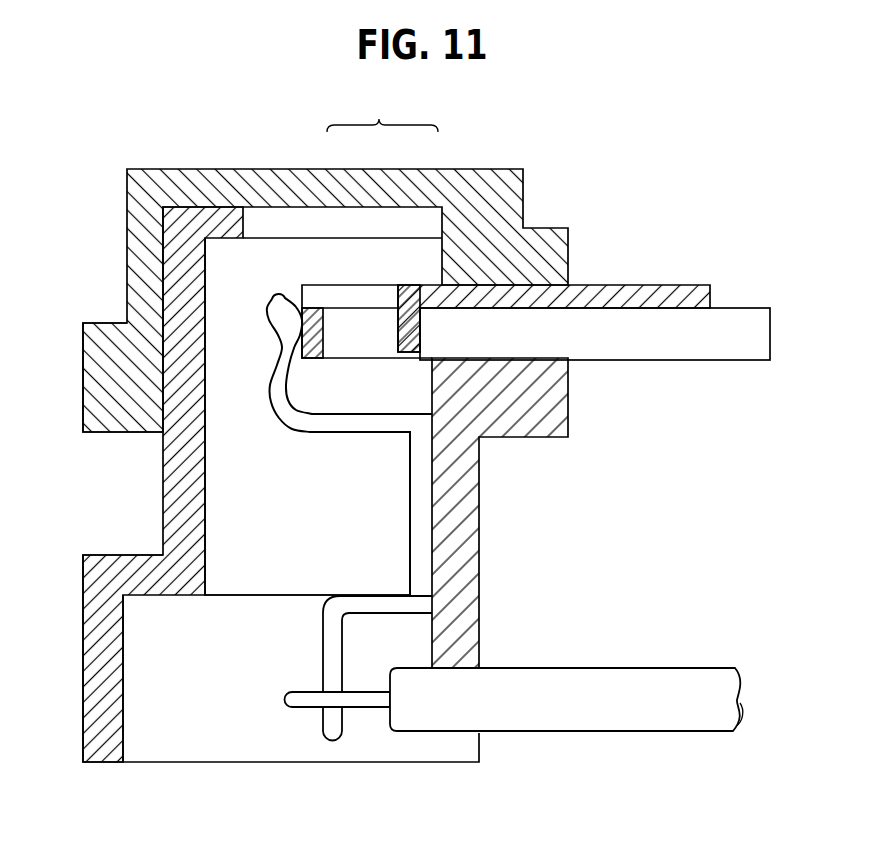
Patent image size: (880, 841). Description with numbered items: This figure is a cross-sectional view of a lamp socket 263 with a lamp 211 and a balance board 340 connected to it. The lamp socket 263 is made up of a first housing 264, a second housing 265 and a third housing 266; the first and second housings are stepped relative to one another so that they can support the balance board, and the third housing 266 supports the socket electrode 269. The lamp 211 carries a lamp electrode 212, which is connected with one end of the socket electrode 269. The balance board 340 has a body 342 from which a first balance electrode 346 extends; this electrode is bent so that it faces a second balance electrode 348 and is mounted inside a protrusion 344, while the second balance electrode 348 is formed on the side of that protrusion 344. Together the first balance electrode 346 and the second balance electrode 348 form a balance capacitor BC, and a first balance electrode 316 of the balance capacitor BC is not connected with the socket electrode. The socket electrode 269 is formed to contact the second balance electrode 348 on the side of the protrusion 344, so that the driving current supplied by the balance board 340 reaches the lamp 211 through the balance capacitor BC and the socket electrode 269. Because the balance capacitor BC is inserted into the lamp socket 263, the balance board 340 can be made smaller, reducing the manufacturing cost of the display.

The cable 211 is at (622, 717).
The lamp electrode 212 is at (370, 697).
The lamp socket 263 is at (588, 134).
The first housing 264 is at (98, 370).
The second housing 265 is at (98, 687).
The third housing 266 is at (227, 485).
The socket electrode 269 is at (320, 723).
The first balance electrode 316 is at (698, 298).
The balance board 340 is at (735, 257).
The body 342 is at (755, 342).
The protrusion 344 is at (367, 332).
The first balance electrode 346 is at (418, 320).
The second balance electrode 348 is at (313, 327).
The balance capacitor BC is at (382, 116).